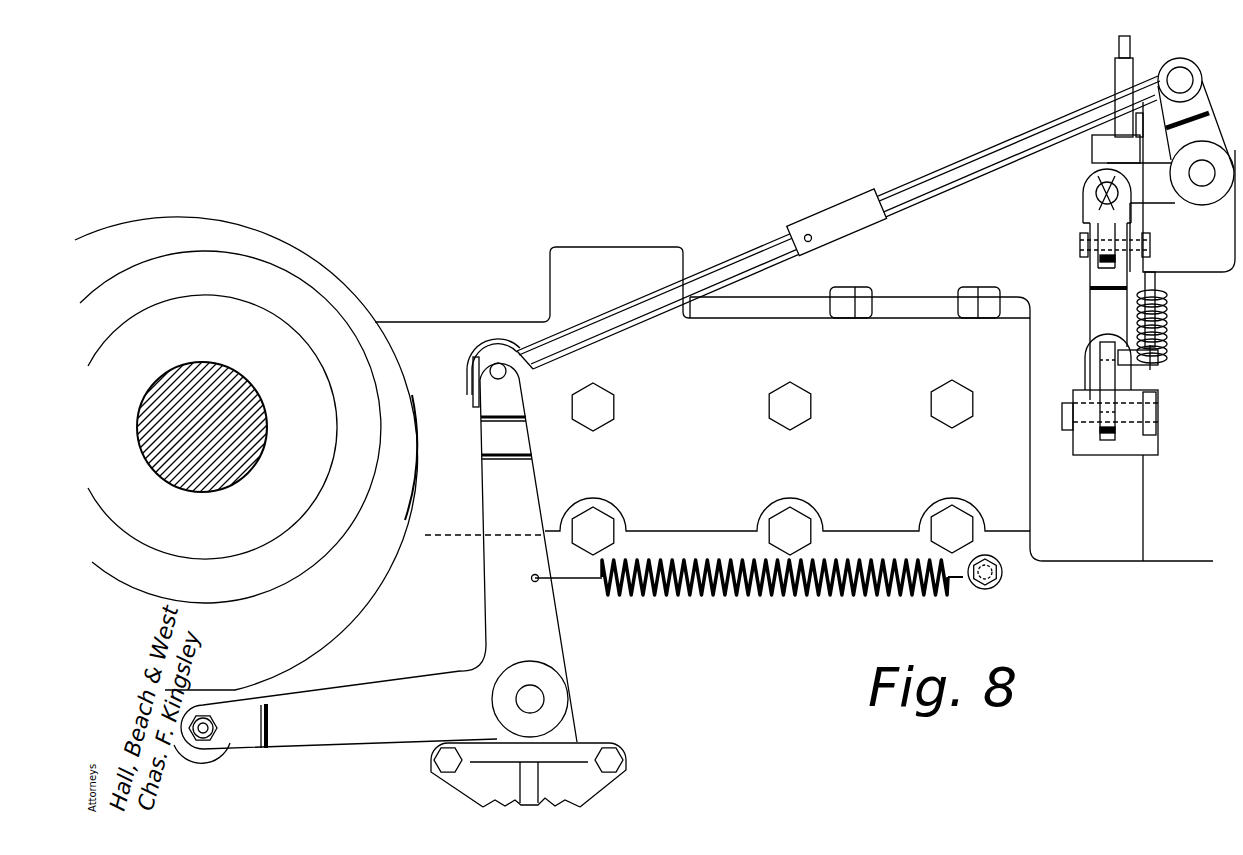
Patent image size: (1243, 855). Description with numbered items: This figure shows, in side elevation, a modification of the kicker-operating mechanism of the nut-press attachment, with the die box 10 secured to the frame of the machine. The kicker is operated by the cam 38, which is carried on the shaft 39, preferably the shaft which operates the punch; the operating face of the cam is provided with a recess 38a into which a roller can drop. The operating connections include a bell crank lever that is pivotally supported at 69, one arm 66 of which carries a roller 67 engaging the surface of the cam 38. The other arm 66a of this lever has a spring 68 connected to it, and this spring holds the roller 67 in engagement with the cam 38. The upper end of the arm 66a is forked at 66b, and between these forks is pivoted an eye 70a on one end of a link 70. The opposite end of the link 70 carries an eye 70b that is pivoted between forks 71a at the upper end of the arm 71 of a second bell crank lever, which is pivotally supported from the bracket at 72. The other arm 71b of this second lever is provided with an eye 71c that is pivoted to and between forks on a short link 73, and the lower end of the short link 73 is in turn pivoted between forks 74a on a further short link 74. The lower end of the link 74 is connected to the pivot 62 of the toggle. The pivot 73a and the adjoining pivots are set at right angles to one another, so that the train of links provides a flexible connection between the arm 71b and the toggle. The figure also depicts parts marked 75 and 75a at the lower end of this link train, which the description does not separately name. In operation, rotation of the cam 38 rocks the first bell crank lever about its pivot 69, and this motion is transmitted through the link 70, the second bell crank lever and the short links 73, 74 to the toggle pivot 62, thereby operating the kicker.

The die box 10 is at (1182, 331).
The cam 38 is at (246, 453).
The recess 38a is at (416, 412).
The shaft 39 is at (246, 381).
The pivot 62 is at (1154, 419).
The arm 66 is at (409, 678).
The arm 66a is at (530, 466).
The forks 66b is at (474, 380).
The roller 67 is at (222, 756).
The spring 68 is at (801, 596).
The pivot 69 is at (533, 700).
The link 70 is at (774, 250).
The eye 70a is at (518, 350).
The eye 70b is at (1184, 60).
The arm 71 is at (1212, 130).
The forks 71a is at (1205, 94).
The arm 71b is at (1170, 190).
The eye 71c is at (1086, 198).
The pivot 72 is at (1206, 184).
The short link 73 is at (1083, 211).
The pivot 73a is at (1080, 244).
The short link 74 is at (1092, 304).
The forks 74a is at (1152, 244).
The bolt 75 is at (1108, 396).
The boss 75a is at (1090, 364).